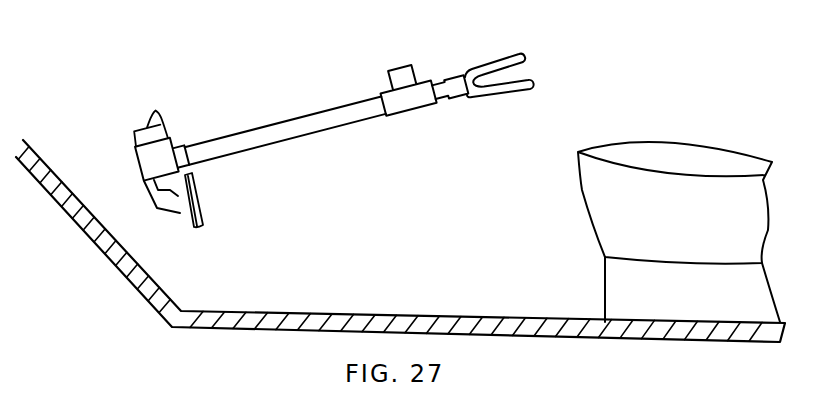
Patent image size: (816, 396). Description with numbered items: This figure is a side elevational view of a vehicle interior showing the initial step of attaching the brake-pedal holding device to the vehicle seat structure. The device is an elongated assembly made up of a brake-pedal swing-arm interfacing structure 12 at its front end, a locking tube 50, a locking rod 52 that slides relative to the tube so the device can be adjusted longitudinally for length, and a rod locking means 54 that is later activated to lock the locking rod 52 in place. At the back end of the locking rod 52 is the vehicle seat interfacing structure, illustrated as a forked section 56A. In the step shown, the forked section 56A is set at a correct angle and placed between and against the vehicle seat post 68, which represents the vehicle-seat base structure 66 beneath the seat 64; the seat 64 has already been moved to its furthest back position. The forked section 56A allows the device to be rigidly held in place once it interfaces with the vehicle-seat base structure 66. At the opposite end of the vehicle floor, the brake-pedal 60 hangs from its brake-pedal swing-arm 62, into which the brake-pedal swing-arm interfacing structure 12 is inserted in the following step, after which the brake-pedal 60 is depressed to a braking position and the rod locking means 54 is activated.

The brake-pedal swing-arm interfacing structure 12 is at (158, 158).
The locking tube 50 is at (272, 132).
The locking rod 52 is at (452, 88).
The rod locking means 54 is at (395, 103).
The forked section 56A is at (485, 92).
The vehicle brake-pedal 60 is at (198, 203).
The brake-pedal swing-arm 62 is at (158, 123).
The seat 64 is at (598, 192).
The vehicle-seat base structure 66 is at (683, 308).
The vehicle seat post 68 is at (612, 295).